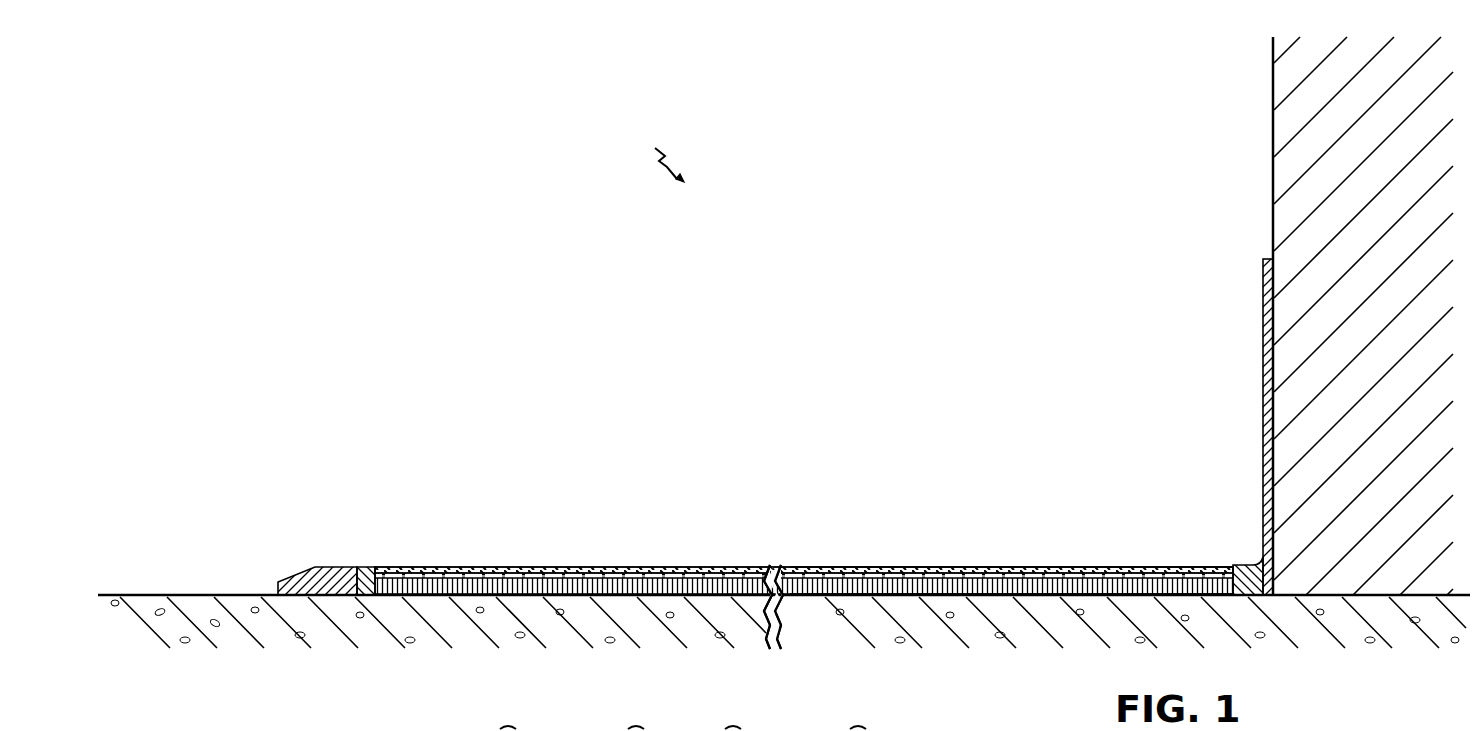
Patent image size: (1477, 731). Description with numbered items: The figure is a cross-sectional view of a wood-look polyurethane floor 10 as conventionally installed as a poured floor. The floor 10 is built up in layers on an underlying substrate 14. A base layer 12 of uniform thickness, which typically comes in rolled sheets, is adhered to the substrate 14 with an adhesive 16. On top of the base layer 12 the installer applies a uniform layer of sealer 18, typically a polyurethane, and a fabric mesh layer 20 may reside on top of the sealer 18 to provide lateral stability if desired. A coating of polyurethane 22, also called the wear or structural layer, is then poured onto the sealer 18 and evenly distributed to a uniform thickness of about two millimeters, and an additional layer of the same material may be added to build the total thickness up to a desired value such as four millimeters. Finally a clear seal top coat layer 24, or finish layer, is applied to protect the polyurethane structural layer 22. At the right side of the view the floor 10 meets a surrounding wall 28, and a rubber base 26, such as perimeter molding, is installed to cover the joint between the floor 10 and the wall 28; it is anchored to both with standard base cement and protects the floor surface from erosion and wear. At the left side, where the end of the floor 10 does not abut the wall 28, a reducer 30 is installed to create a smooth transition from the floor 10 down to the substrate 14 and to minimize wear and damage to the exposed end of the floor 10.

The polyurethane floor 10 is at (662, 153).
The base layer 12 is at (804, 585).
The substrate 14 is at (205, 597).
The adhesive 16 is at (428, 577).
The sealer 18 is at (637, 575).
The fabric mesh layer 20 is at (710, 575).
The polyurethane structural layer 22 is at (822, 573).
The top coat layer 24 is at (976, 573).
The rubber base 26 is at (1262, 365).
The wall 28 is at (1272, 119).
The reducer 30 is at (333, 567).